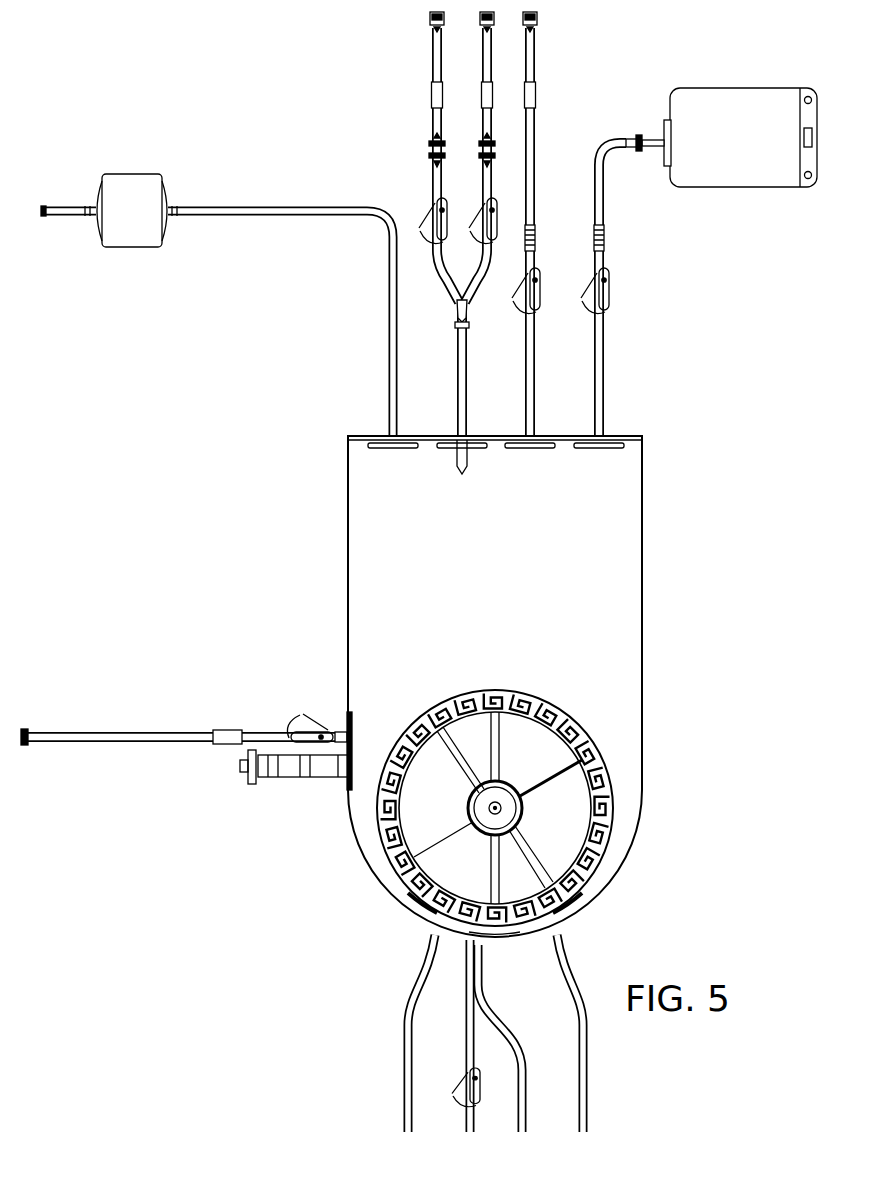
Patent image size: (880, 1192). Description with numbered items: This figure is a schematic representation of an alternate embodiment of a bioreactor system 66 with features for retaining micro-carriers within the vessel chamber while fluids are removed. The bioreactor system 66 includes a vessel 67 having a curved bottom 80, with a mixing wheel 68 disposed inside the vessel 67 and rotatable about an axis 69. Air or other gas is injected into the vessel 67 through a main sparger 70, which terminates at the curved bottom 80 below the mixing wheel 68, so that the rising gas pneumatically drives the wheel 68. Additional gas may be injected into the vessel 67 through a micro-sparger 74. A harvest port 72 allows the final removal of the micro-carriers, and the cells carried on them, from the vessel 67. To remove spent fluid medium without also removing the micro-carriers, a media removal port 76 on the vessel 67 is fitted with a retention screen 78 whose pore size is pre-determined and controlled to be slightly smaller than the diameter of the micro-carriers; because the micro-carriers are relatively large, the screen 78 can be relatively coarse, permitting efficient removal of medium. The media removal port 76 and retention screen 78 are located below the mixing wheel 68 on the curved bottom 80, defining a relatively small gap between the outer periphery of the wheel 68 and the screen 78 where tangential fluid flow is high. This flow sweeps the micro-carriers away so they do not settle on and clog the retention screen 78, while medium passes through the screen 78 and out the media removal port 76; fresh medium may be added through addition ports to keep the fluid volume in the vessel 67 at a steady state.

The bioreactor system 66 is at (682, 478).
The vessel 67 is at (643, 668).
The mixing wheel 68 is at (615, 800).
The axis 69 is at (488, 809).
The main sparger 70 is at (405, 1010).
The harvest port 72 is at (465, 1045).
The micro-sparger 74 is at (521, 1048).
The media removal port 76 is at (588, 1048).
The retention screen 78 is at (578, 915).
The curved bottom 80 is at (375, 900).